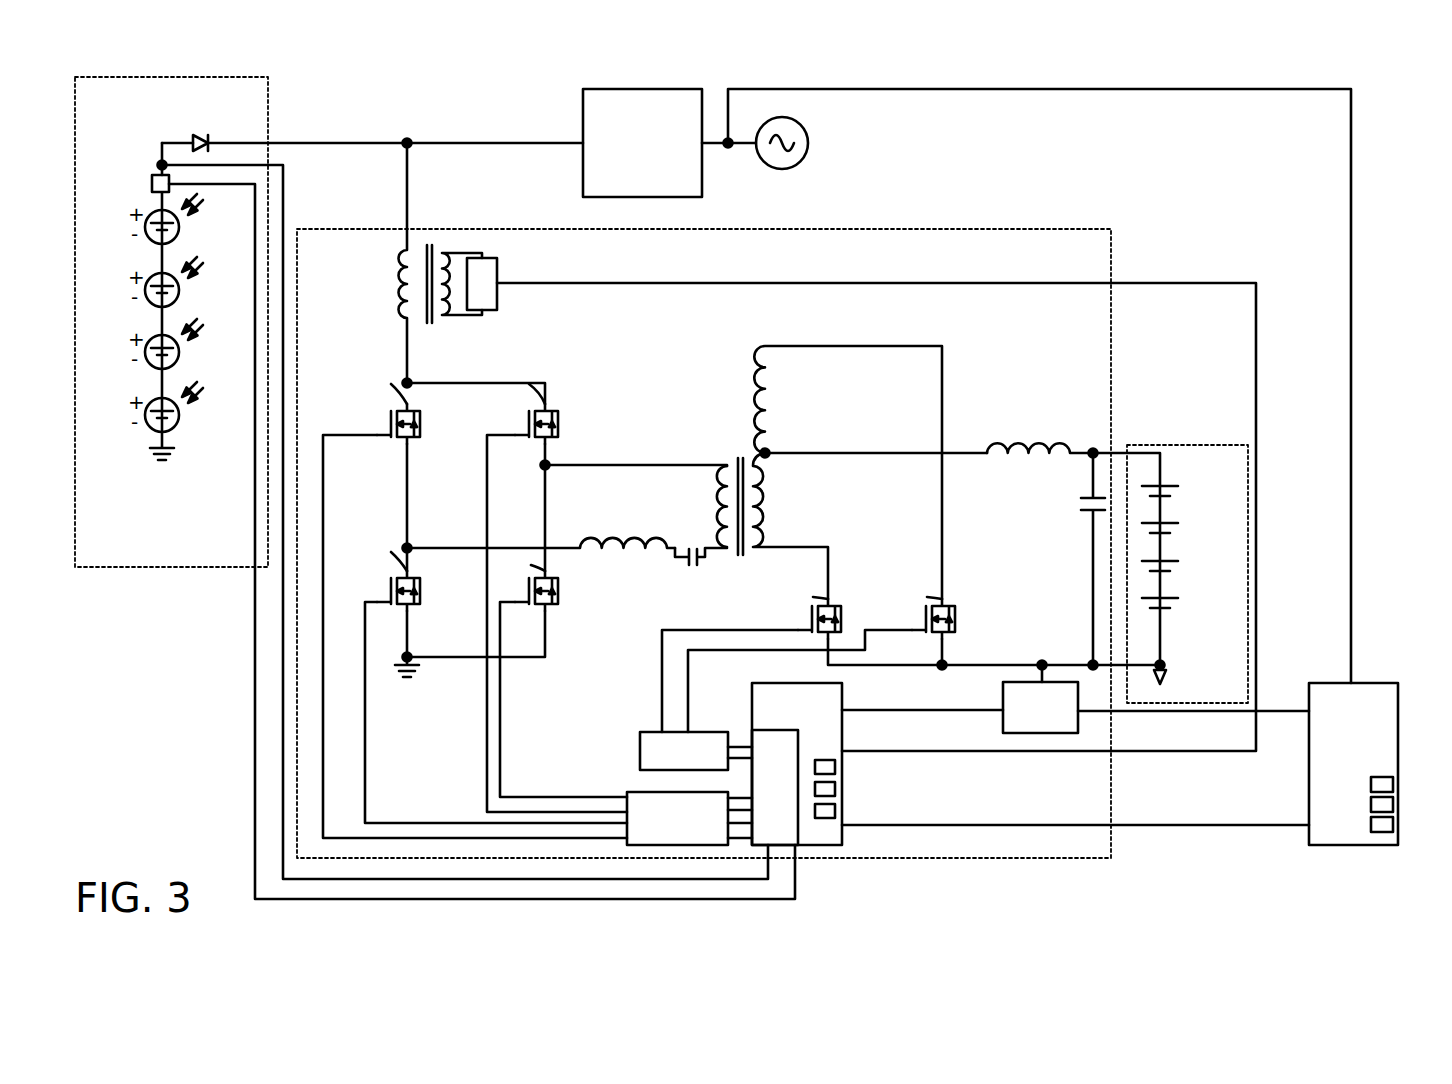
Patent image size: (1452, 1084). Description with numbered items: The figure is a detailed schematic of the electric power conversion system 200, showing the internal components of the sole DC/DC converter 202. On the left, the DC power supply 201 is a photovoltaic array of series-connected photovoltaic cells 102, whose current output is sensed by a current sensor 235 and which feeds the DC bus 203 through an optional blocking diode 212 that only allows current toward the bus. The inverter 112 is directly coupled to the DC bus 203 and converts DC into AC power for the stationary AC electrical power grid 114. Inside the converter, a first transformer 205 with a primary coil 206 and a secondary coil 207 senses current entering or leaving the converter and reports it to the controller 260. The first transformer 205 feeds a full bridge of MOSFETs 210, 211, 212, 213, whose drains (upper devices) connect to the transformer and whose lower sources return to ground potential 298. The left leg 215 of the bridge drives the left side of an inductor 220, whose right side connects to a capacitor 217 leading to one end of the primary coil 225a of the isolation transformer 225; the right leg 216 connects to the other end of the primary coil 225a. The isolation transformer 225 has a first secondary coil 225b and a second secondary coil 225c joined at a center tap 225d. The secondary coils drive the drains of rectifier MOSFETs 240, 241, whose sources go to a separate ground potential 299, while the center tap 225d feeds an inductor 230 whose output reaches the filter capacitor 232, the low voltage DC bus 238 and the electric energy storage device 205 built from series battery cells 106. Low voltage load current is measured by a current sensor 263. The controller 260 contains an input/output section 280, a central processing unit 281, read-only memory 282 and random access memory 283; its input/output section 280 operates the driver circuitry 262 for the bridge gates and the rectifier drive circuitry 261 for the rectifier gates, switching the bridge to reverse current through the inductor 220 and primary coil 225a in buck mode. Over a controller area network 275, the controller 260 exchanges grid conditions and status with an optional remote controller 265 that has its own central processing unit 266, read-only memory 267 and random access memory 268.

The photovoltaic cell 102 is at (180, 228).
The battery cell 106 is at (1165, 500).
The inverter 112 is at (583, 172).
The stationary AC electrical power grid 114 is at (780, 169).
The electric power conversion system 200 is at (375, 86).
The DC power supply 201 is at (140, 576).
The sole DC/DC converter 202 is at (1050, 219).
The DC bus 203 is at (425, 147).
The first transformer 205 is at (438, 262).
The primary coil 206 is at (404, 262).
The secondary coil 207 is at (443, 313).
The MOSFET 210 is at (413, 415).
The MOSFET 211 is at (413, 583).
The MOSFET / blocking diode 212 is at (200, 134).
The MOSFET 213 is at (551, 583).
The left leg 215 is at (410, 483).
The right leg 216 is at (547, 483).
The capacitor 217 is at (696, 565).
The inductor 220 is at (660, 543).
The isolation transformer 225 is at (735, 462).
The primary coil 225a is at (718, 512).
The first secondary coil 225b is at (770, 512).
The second secondary coil 225c is at (770, 418).
The center tap 225d is at (770, 450).
The inductor 230 is at (1040, 448).
The filter capacitor 232 is at (1092, 512).
The current sensor 235 is at (151, 179).
The low voltage DC bus 238 is at (1097, 450).
The MOSFET 240 is at (831, 597).
The MOSFET 241 is at (940, 597).
The controller 260 is at (797, 764).
The rectifier drive circuitry 261 is at (696, 751).
The driver circuitry 262 is at (689, 818).
The current sensor 263 is at (1075, 697).
The remote controller 265 is at (1353, 764).
The central processing unit 266 is at (1393, 785).
The read-only memory 267 is at (1393, 805).
The random access memory 268 is at (1393, 825).
The controller area network 275 is at (1142, 828).
The input/output section 280 is at (775, 787).
The central processing unit 281 is at (835, 767).
The read-only memory 282 is at (835, 789).
The random access memory 283 is at (835, 811).
The ground potential 298 is at (413, 678).
The ground potential 299 is at (1165, 679).